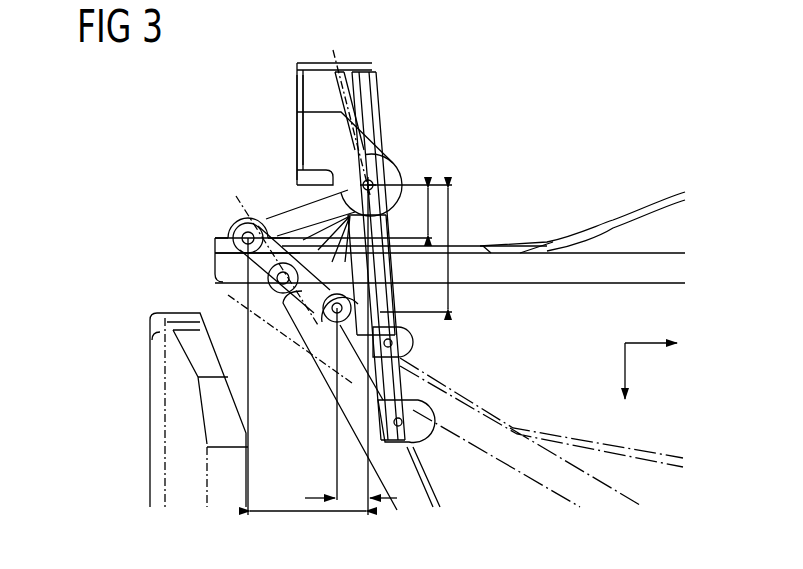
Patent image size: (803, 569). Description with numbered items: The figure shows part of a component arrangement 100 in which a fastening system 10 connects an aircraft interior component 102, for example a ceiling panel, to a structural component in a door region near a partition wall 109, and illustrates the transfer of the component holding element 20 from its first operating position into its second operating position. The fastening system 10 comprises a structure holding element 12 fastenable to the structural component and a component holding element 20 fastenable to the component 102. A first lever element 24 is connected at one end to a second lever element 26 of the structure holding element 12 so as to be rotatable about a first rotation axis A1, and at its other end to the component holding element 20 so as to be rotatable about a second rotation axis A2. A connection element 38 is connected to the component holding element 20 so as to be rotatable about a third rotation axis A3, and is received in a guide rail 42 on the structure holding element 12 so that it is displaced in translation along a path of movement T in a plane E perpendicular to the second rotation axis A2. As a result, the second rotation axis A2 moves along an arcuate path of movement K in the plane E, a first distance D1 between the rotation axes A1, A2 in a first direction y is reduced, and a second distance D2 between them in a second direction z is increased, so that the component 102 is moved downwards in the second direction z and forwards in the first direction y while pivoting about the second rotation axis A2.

The fastening system 10 is at (224, 150).
The structure holding element 12 is at (303, 63).
The component holding element 20 is at (242, 268).
The first lever element 24 is at (298, 217).
The second lever element 26 is at (303, 127).
The connection element 38 is at (408, 345).
The guide rail 42 is at (376, 113).
The component arrangement 100 is at (572, 136).
The component 102 is at (582, 270).
The partition wall 109 is at (150, 385).
The first rotation axis A1 is at (374, 180).
The second rotation axis A2 is at (235, 236).
The third rotation axis A3 is at (413, 440).
The arcuate path of movement K is at (240, 215).
The path of movement T is at (376, 97).
The plane E is at (382, 104).
The first distance D1 is at (322, 393).
The second distance D2 is at (433, 250).
The first direction y is at (663, 342).
The second direction z is at (626, 384).